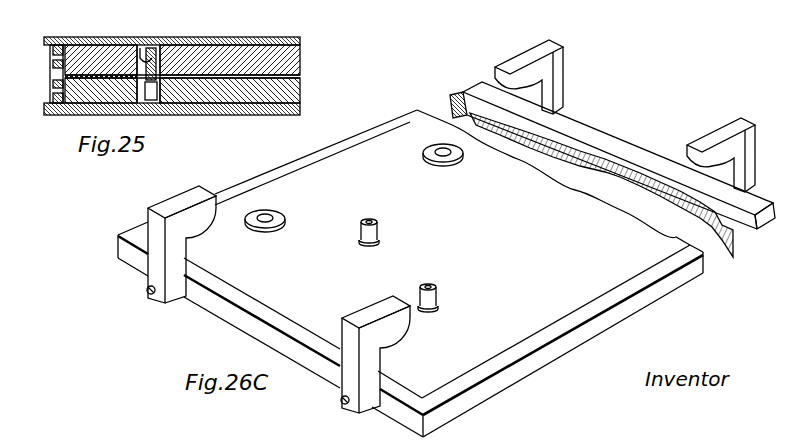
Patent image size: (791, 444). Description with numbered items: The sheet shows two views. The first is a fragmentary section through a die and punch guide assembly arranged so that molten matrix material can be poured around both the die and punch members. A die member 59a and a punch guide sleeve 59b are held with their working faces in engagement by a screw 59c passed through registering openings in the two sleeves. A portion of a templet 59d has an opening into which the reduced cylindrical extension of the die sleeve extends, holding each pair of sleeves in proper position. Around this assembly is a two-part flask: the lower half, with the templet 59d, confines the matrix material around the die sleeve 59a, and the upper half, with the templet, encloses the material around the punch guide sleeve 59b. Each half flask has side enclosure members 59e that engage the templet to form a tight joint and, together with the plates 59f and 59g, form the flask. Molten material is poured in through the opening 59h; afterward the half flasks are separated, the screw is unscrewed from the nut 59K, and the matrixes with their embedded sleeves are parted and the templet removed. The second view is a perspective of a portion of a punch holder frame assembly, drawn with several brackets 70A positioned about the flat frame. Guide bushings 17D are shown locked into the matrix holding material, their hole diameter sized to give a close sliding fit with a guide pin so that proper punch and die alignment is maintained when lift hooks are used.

In FIG. 25, the die member 59a is at (162, 101).
In FIG. 25, the punch guide sleeve 59b is at (195, 48).
In FIG. 25, the screw 59c is at (150, 60).
In FIG. 25, the templet 59d is at (302, 77).
In FIG. 25, the side enclosure members 59e is at (78, 20).
In FIG. 25, the plate 59f is at (278, 42).
In FIG. 25, the plate 59g is at (302, 108).
In FIG. 25, the opening 59h is at (63, 77).
In FIG. 25, the nut 59K is at (157, 52).
In FIG. 26C, the bracket 70A is at (168, 206).
In FIG. 26C, the guide bushings 17D is at (283, 214).